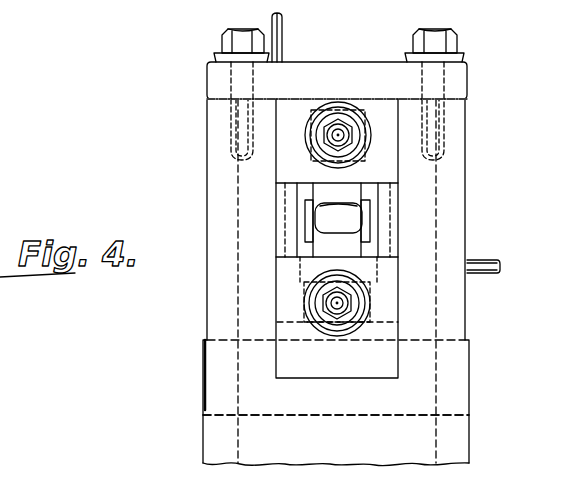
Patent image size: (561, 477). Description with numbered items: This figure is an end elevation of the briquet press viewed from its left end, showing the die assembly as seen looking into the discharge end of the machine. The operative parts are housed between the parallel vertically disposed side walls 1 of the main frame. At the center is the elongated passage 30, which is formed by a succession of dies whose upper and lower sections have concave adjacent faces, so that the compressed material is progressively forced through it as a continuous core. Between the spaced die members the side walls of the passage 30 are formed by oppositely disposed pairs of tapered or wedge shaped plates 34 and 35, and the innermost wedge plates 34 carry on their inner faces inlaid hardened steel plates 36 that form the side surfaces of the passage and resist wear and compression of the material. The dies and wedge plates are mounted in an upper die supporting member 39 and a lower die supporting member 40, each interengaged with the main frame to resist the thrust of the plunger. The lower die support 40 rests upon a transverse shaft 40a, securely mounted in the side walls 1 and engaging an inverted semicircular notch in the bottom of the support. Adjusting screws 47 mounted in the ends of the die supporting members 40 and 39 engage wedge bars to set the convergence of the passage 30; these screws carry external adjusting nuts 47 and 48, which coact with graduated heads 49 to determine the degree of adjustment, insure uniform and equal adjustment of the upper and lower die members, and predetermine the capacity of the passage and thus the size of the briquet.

The side walls 1 is at (463, 163).
The elongated passage 30 is at (347, 221).
The wedge shaped plates 34 is at (367, 246).
The wedge shaped plates 35 is at (294, 241).
The inlaid hardened steel plates 36 is at (366, 204).
The upper die supporting member 39 is at (455, 78).
The lower die supporting member 40 is at (337, 241).
The transverse shaft 40a is at (336, 434).
The adjusting screws 47 is at (339, 304).
The external adjusting nut 48 is at (348, 116).
The graduated head 49 is at (316, 138).